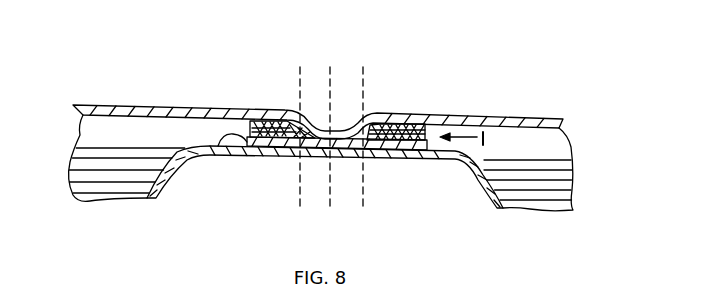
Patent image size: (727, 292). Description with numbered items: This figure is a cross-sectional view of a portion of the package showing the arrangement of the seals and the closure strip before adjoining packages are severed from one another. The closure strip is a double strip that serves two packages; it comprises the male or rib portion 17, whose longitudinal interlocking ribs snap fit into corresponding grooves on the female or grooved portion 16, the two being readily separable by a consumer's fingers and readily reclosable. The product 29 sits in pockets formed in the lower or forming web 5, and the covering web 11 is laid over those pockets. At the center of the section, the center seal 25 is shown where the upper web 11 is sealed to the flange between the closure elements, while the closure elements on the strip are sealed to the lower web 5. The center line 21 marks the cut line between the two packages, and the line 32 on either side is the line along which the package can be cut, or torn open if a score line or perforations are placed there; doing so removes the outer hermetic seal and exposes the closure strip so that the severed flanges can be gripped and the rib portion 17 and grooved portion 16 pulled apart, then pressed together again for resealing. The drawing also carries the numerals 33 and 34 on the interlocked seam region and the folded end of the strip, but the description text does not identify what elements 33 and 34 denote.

The flange of lower plate 5 is at (483, 172).
The upper plate 11 is at (503, 116).
The interlocking seam portion 16 is at (440, 120).
The lower plate 17 is at (410, 160).
The central depression 21 is at (330, 67).
The intermediate layer 25 is at (310, 160).
The chamber 29 is at (117, 178).
The seam boundary 32 is at (300, 67).
The interlocking seam portion 33 is at (253, 113).
The folded end 34 is at (217, 146).